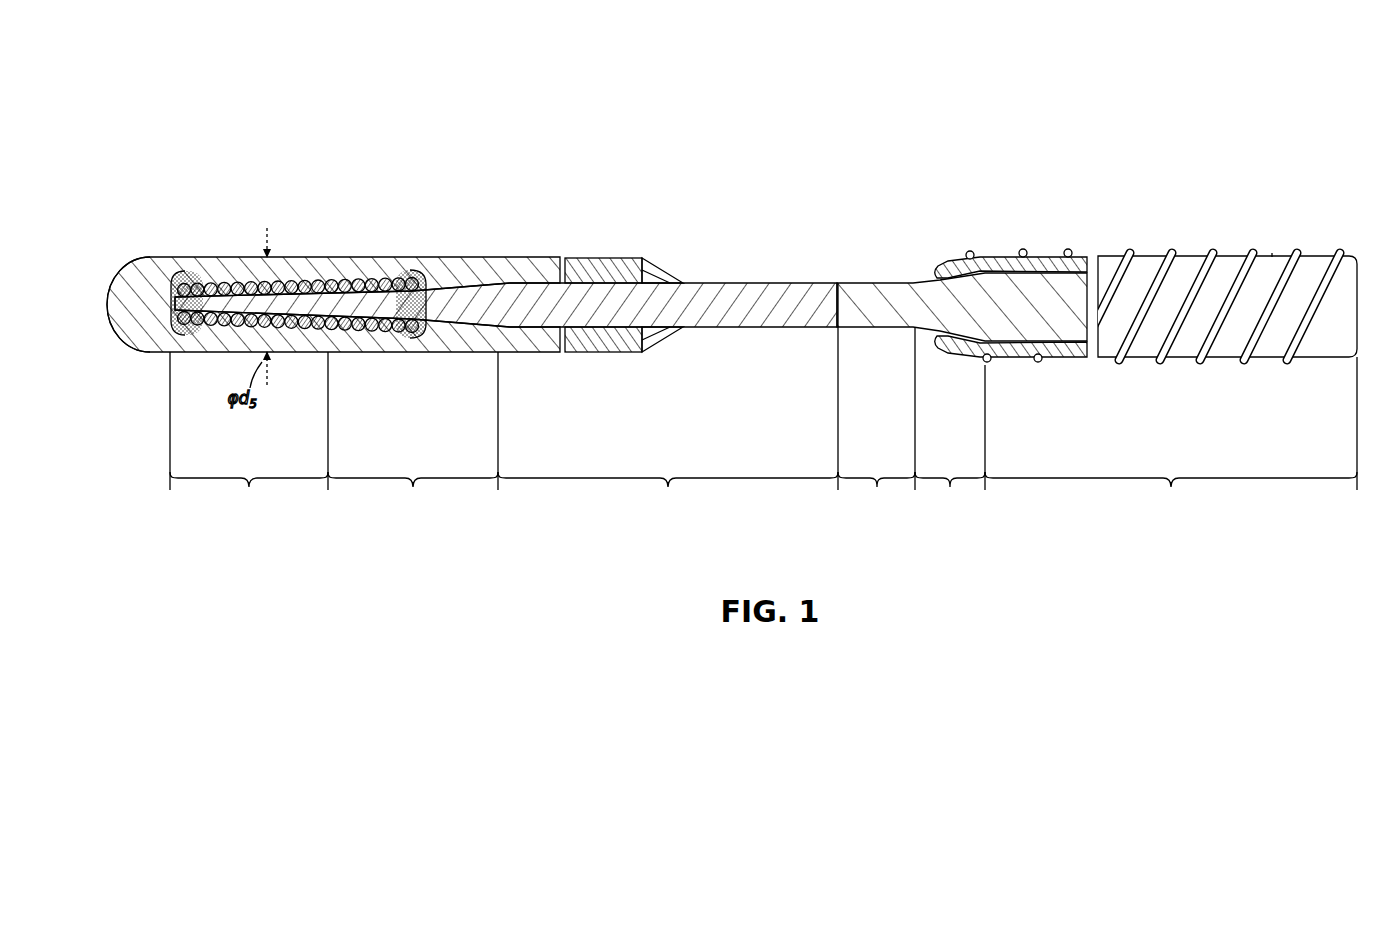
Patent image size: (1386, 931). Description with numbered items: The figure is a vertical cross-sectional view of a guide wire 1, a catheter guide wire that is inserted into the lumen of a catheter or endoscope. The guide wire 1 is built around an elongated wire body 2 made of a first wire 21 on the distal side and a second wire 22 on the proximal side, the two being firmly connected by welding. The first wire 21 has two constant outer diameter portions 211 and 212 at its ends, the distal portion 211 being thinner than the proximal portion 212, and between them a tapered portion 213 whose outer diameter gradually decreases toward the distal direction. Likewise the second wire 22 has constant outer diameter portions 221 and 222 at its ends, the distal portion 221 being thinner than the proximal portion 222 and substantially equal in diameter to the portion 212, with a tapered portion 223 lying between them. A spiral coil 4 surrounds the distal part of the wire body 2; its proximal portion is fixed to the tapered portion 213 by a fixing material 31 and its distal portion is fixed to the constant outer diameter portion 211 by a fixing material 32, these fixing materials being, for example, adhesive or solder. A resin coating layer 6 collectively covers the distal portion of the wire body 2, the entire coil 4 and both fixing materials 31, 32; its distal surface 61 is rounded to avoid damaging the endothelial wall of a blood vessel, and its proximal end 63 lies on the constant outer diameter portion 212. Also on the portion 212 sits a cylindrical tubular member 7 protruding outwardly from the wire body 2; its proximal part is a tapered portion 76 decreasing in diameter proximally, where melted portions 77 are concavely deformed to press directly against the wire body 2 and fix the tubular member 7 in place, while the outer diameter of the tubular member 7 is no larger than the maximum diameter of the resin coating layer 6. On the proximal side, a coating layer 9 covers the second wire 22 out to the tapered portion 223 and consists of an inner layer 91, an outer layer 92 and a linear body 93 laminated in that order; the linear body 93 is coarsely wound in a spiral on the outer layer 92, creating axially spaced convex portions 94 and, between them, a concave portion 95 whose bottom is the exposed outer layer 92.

The guide wire 1 is at (1114, 107).
The wire body 2 is at (631, 263).
The spiral coil 4 is at (367, 276).
The resin coating layer 6 is at (298, 268).
The tubular member 7 is at (647, 301).
The coating layer 9 is at (1167, 283).
The first wire 21 is at (503, 298).
The second wire 22 is at (900, 306).
The fixing material 31 is at (418, 272).
The fixing material 32 is at (185, 272).
The distal surface 61 is at (103, 297).
The proximal end 63 is at (582, 268).
The tapered portion 76 is at (684, 278).
The melted portion 77 is at (652, 272).
The inner layer 91 is at (990, 256).
The outer layer 92 is at (1059, 254).
The linear body 93 is at (1160, 257).
The convex portion 94 is at (1024, 250).
The concave portion 95 is at (1272, 254).
The constant outer diameter portion 211 is at (249, 433).
The constant outer diameter portion 212 is at (668, 398).
The tapered portion 213 is at (413, 433).
The constant outer diameter portion 221 is at (876, 420).
The constant outer diameter portion 222 is at (1171, 435).
The tapered portion 223 is at (950, 439).